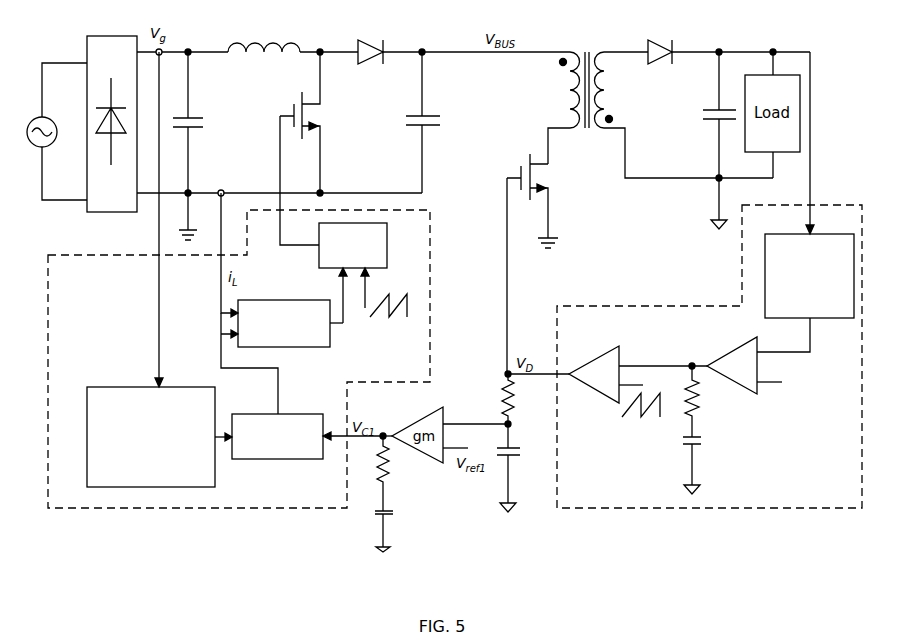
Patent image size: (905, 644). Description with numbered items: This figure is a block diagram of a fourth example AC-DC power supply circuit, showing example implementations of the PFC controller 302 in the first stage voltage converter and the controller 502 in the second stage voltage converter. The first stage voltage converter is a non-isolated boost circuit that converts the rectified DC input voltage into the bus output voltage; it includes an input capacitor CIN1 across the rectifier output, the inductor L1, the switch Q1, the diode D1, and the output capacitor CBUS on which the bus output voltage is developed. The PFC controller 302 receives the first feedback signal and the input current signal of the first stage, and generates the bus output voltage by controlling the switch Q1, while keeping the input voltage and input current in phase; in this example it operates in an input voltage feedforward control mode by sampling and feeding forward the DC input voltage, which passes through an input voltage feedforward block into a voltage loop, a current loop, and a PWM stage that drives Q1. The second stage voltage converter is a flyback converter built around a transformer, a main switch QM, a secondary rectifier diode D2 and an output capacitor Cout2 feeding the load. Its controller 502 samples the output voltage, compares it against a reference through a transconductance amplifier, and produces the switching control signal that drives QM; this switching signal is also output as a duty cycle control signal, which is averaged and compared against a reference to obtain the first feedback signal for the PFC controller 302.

The PFC controller 302 is at (239, 359).
The controller 502 is at (709, 280).
The inductor L1 is at (264, 35).
The diode D1 is at (369, 39).
The switch Q1 is at (310, 122).
The input capacitor CIN1 is at (199, 122).
The output capacitor CBUS is at (401, 122).
The main switch QM is at (540, 196).
The output rectifier diode D2 is at (660, 39).
The output capacitor Cout2 is at (701, 115).